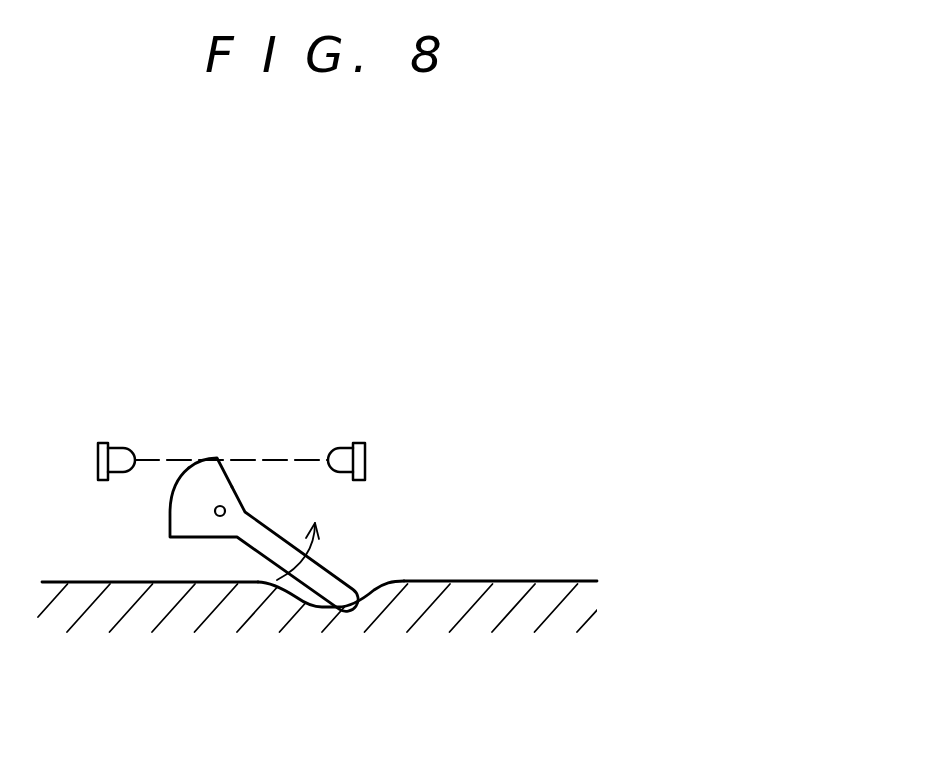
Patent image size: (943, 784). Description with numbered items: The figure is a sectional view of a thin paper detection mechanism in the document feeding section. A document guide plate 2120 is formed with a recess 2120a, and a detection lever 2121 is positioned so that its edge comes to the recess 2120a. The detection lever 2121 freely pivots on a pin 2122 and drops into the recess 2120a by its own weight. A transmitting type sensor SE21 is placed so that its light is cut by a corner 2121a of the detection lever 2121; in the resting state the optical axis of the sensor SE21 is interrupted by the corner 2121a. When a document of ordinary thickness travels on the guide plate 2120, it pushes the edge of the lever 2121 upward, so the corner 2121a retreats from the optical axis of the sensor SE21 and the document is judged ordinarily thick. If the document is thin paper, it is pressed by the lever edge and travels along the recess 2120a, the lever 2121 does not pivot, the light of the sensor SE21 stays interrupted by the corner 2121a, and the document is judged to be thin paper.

The document guide plate 2120 is at (540, 580).
The recess 2120a is at (308, 595).
The detection lever 2121 is at (332, 569).
The corner 2121a is at (208, 458).
The pin 2122 is at (215, 511).
The transmitting type sensor SE21 is at (340, 443).